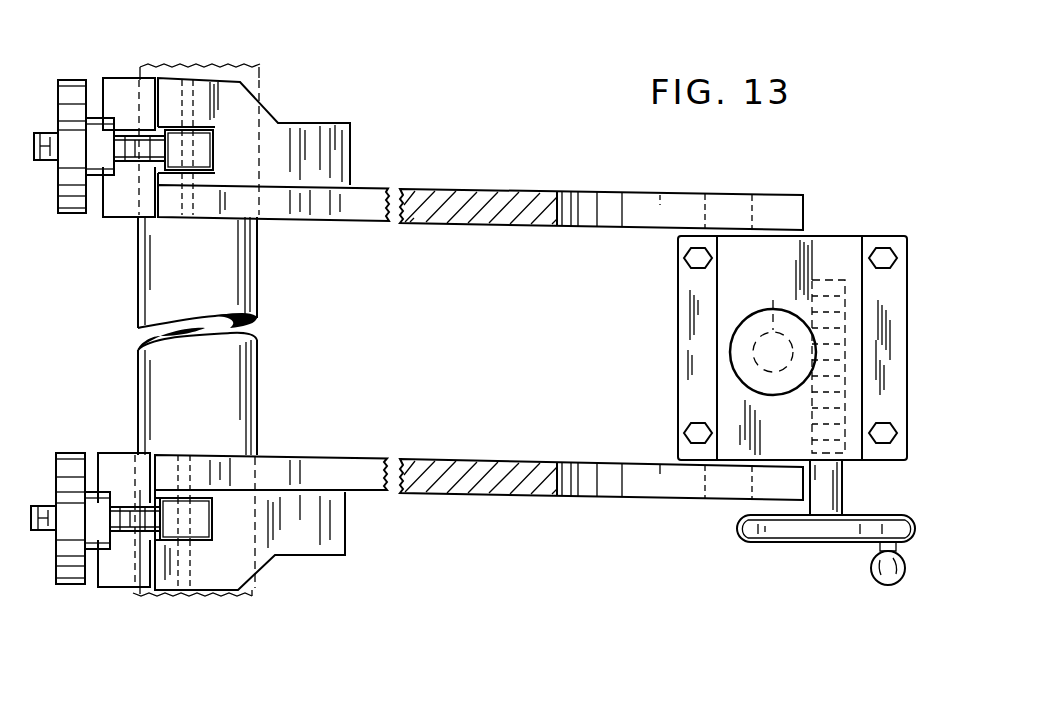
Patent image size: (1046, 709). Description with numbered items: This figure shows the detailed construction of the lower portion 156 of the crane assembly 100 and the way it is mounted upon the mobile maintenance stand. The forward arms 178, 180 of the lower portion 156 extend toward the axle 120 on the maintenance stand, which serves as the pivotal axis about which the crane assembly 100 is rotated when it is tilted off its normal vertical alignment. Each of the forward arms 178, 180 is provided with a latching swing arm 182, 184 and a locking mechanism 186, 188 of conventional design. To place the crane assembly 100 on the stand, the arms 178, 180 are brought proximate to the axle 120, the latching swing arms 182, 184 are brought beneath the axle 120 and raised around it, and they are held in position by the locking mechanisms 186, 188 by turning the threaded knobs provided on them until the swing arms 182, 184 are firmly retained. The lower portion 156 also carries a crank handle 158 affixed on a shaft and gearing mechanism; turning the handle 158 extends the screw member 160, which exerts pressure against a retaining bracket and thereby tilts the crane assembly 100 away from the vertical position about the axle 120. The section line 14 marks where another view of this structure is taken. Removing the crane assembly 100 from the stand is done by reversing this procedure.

The line 14- 14 is at (45, 233).
The crane assembly 100 is at (845, 232).
The axle 120 is at (246, 406).
The lower portion 156 is at (601, 150).
The handle 158 is at (810, 532).
The screw member 160 is at (772, 322).
The forward arm 178 is at (268, 116).
The forward arm 180 is at (273, 558).
The latching swing arm 182 is at (127, 80).
The latching swing arm 184 is at (141, 577).
The locking mechanism 186 is at (88, 80).
The locking mechanism 188 is at (88, 584).